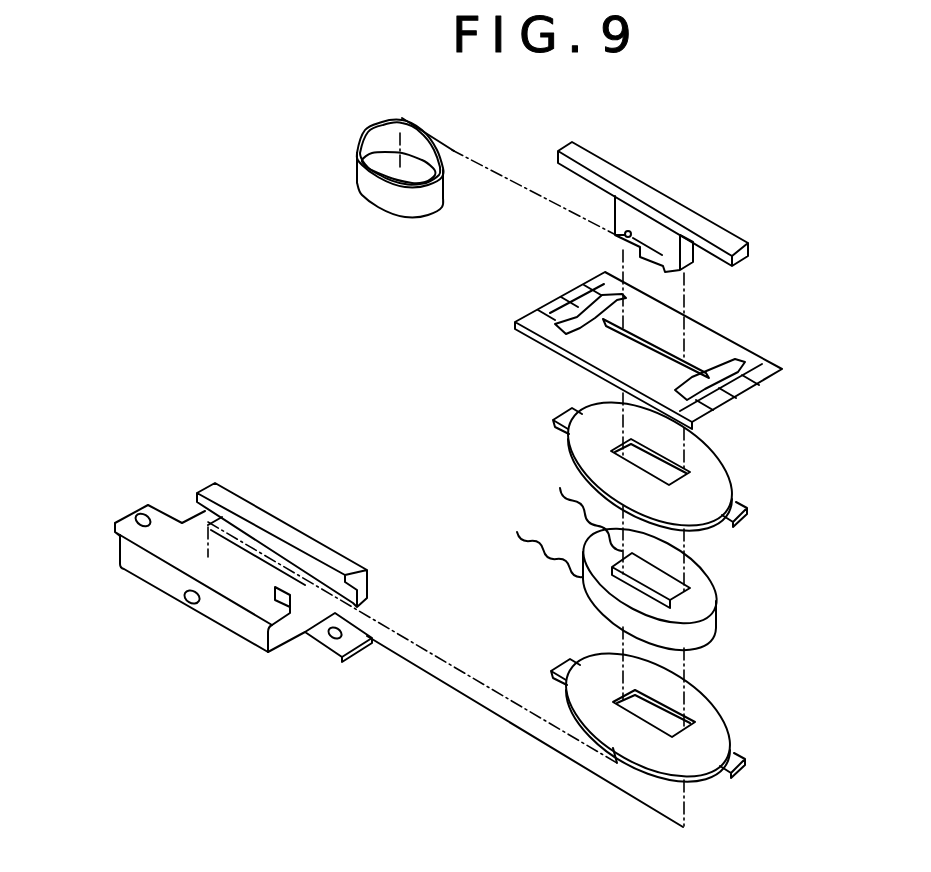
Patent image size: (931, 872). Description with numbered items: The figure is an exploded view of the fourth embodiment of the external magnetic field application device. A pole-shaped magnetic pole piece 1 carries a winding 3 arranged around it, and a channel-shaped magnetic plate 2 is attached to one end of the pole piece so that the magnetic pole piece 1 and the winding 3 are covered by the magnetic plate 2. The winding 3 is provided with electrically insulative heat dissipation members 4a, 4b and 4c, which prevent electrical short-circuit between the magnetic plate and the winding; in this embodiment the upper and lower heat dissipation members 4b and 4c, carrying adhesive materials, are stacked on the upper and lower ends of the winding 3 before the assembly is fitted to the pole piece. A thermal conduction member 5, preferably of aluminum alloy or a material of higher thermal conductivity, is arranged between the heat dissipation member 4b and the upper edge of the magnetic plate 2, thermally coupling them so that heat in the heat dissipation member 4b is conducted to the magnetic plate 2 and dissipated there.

The magnetic pole piece 1 is at (749, 248).
The magnetic plate 2 is at (280, 522).
The winding 3 is at (704, 608).
The heat dissipation member 4a is at (405, 208).
The heat dissipation member 4b is at (740, 504).
The heat dissipation member 4c is at (720, 725).
The thermal conduction member 5 is at (767, 363).